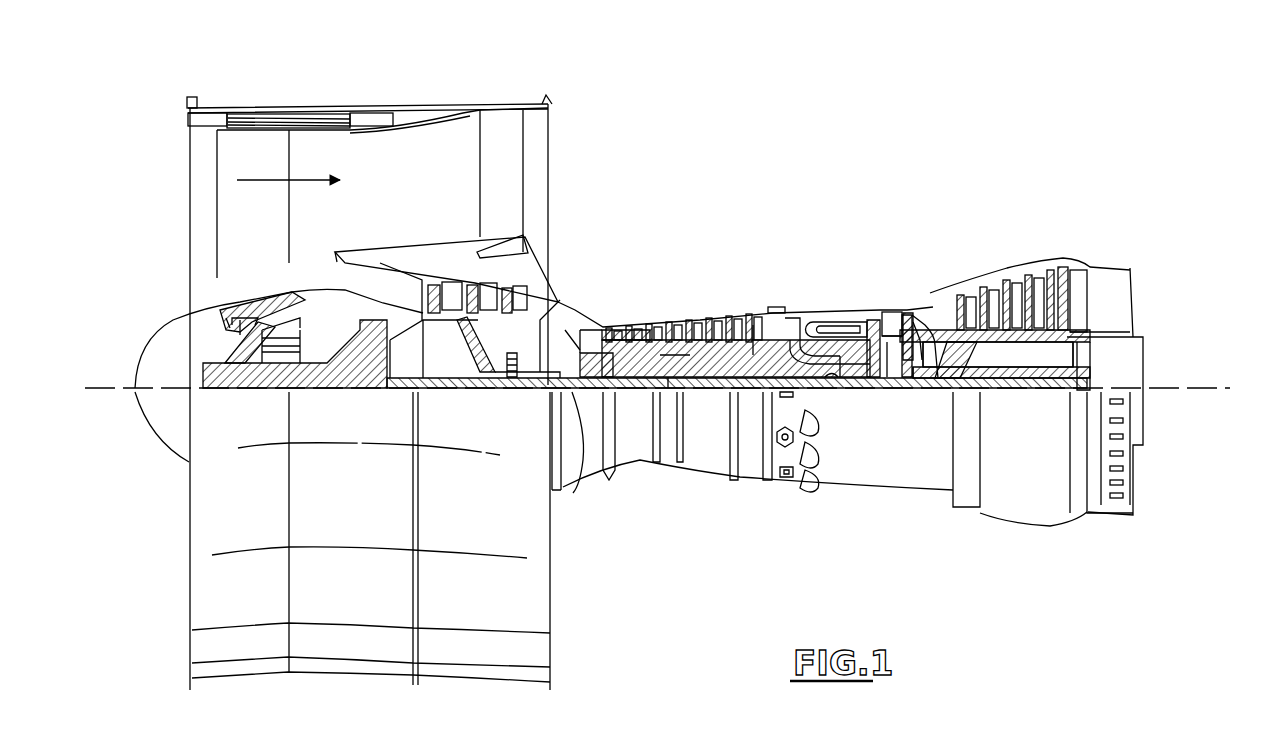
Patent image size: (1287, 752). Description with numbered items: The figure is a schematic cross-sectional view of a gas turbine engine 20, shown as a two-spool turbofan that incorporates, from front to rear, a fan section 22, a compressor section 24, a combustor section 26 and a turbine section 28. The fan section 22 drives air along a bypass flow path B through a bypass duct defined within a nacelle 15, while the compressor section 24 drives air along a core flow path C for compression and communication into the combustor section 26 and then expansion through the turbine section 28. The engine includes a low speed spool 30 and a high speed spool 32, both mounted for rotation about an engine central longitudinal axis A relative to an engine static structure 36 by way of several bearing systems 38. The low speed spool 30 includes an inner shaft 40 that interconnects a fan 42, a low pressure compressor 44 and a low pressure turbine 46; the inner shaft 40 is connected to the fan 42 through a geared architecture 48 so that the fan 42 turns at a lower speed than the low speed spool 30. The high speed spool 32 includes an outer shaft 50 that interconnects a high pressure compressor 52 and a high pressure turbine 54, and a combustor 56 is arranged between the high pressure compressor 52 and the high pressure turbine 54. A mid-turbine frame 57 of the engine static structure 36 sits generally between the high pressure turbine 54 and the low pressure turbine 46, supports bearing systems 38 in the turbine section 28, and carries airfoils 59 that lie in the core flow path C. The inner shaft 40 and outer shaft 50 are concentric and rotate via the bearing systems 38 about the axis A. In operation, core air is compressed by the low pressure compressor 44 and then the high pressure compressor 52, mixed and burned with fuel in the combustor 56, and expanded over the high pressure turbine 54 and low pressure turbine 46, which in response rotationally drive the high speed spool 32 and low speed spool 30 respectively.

The gas turbine engine 20 is at (832, 157).
The fan section 22 is at (300, 100).
The nacelle 15 is at (370, 112).
The fan 42 is at (272, 235).
The bypass flow path B is at (276, 180).
The core flow path C is at (378, 290).
The low pressure compressor 44 is at (473, 300).
The compressor section 24 is at (602, 300).
The combustor section 26 is at (824, 287).
The turbine section 28 is at (982, 193).
The low pressure turbine 46 is at (1018, 283).
The high pressure compressor 52 is at (683, 363).
The high speed spool 32 is at (755, 325).
The high pressure turbine 54 is at (888, 310).
The combustor 56 is at (825, 330).
The mid-turbine frame 57 is at (935, 295).
The airfoils 59 is at (930, 323).
The outer shaft 50 is at (833, 380).
The geared architecture 48 is at (378, 372).
The bearing systems 38 is at (508, 372).
The inner shaft 40 is at (573, 468).
The low speed spool 30 is at (707, 398).
The engine static structure 36 is at (748, 478).
The engine central longitudinal axis A is at (1222, 388).